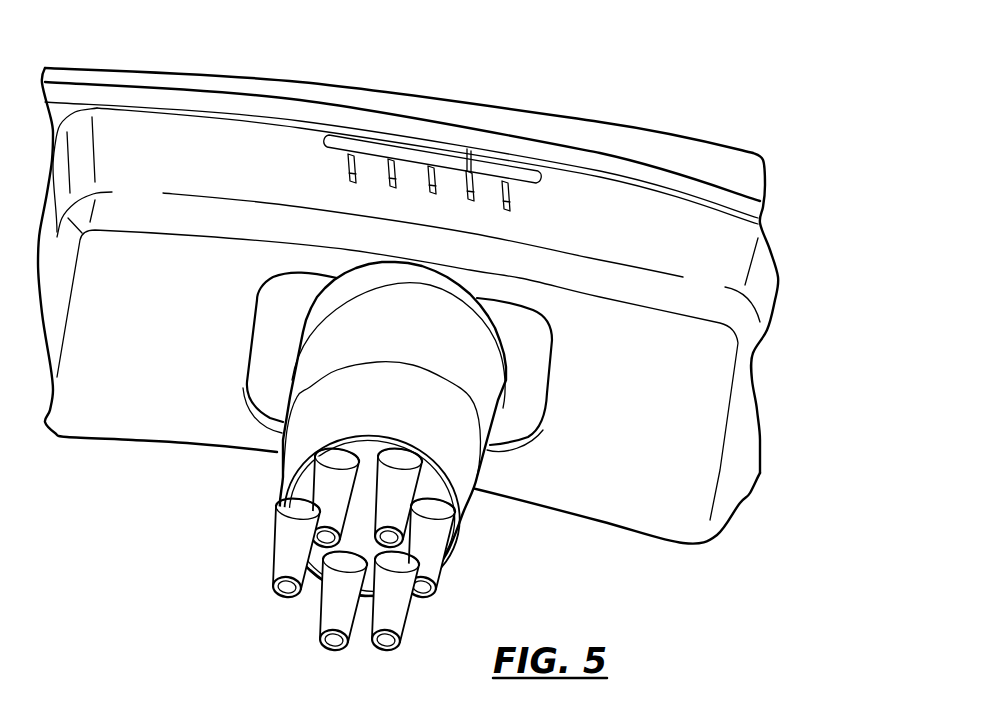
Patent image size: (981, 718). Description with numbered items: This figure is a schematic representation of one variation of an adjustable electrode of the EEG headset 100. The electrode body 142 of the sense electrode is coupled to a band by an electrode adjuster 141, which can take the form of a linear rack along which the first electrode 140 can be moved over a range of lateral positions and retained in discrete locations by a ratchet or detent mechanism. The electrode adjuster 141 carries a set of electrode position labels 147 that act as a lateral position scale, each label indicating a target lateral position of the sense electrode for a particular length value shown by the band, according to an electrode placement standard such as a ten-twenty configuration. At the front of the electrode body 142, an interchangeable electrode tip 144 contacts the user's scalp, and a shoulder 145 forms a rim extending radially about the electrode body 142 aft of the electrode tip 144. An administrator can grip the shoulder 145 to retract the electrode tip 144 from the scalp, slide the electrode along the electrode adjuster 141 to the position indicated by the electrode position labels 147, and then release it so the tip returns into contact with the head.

The EEG headset 100 is at (449, 332).
The first electrode 140 is at (192, 147).
The electrode adjuster 141 is at (469, 148).
The electrode position labels 147 is at (510, 203).
The electrode body 142 is at (528, 400).
The shoulder 145 is at (330, 338).
The electrode tip 144 is at (297, 550).